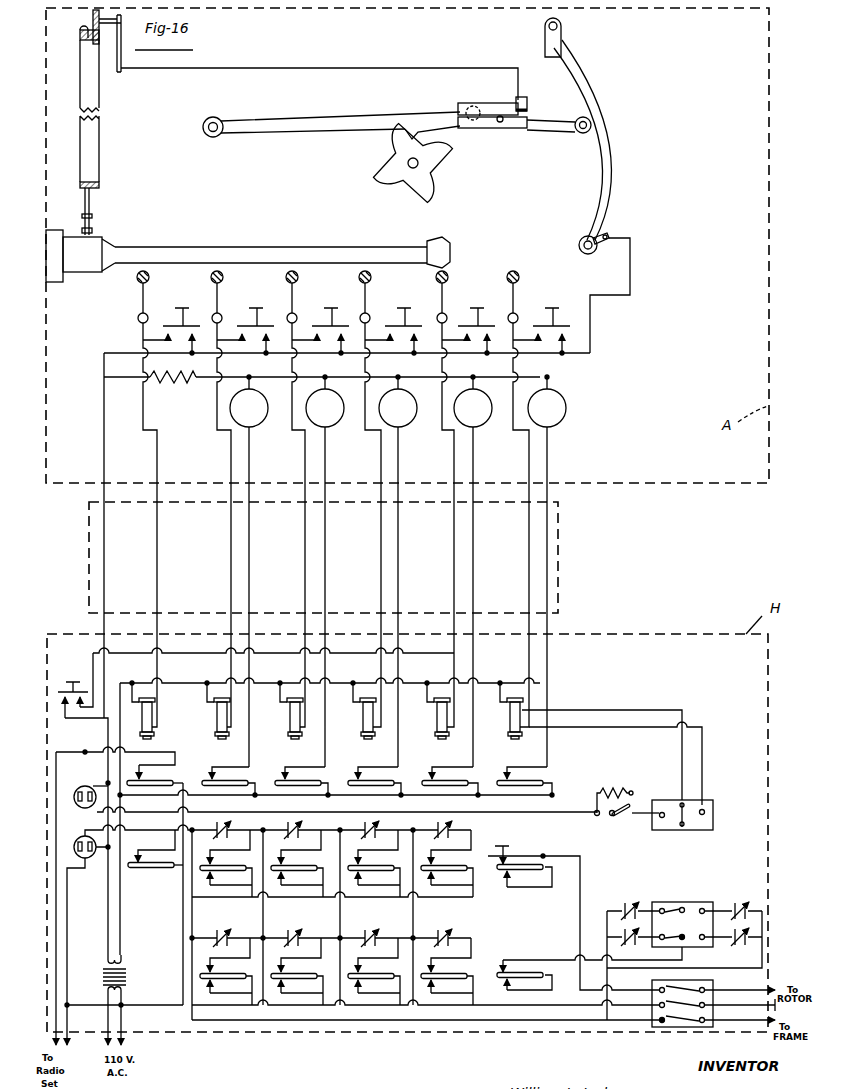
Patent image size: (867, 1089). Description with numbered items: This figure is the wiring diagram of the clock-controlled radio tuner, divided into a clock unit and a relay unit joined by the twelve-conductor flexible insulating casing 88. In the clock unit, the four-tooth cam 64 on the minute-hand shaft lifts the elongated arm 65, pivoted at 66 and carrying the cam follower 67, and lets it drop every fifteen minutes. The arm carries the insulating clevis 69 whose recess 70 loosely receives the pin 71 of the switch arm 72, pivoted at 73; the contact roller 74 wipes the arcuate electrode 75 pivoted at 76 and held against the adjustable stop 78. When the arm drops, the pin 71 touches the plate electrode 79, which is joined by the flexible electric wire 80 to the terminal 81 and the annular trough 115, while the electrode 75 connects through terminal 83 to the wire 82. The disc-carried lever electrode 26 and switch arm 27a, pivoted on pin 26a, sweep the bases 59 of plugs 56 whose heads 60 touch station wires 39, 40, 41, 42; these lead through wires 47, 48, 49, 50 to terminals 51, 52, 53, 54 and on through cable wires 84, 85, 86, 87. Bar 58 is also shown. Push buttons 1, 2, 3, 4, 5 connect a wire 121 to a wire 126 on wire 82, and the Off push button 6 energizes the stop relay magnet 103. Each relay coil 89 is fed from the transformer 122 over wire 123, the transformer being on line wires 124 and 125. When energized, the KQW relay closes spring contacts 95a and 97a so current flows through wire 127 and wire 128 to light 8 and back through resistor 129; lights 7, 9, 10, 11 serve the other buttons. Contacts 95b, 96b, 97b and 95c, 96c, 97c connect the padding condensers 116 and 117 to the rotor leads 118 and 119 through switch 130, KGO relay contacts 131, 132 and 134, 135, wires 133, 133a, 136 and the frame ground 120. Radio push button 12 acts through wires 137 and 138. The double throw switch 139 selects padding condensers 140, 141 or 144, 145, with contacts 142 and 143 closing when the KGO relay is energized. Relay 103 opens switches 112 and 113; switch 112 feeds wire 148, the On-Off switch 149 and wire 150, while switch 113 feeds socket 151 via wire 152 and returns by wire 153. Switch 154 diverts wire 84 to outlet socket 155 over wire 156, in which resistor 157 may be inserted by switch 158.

The push button 1 is at (560, 309).
The push button 2 is at (484, 309).
The push button 3 is at (411, 309).
The push button 4 is at (338, 309).
The push button 5 is at (262, 309).
The push button 6 is at (189, 309).
The light 7 is at (561, 397).
The light 8 is at (486, 398).
The light 9 is at (411, 398).
The light 10 is at (337, 396).
The light 11 is at (266, 398).
The push button 12 is at (81, 680).
The lever electrode 26 is at (93, 231).
The pivot pin 26a is at (96, 215).
The switch arm 27a is at (85, 198).
The wire 39 is at (516, 270).
The wire 40 is at (448, 279).
The wire 41 is at (371, 278).
The wire 42 is at (137, 279).
The wire 47 is at (517, 300).
The wire 48 is at (445, 300).
The wire 49 is at (367, 300).
The wire 50 is at (143, 298).
The terminal 51 is at (519, 316).
The terminal 52 is at (447, 317).
The terminal 53 is at (370, 316).
The terminal 54 is at (138, 321).
The plug 56 is at (70, 272).
The bar 58 is at (250, 252).
The plug base 59 is at (88, 275).
The plug head 60 is at (443, 241).
The four-tooth cam 64 is at (399, 190).
The elongated arm 65 is at (327, 135).
The pivot 66 is at (221, 119).
The cam follower 67 is at (415, 128).
The clevis 69 is at (464, 128).
The recess 70 is at (505, 121).
The pin 71 is at (500, 103).
The switch arm 72 is at (562, 133).
The pivot 73 is at (466, 106).
The contact roller 74 is at (580, 118).
The arcuate electrode 75 is at (598, 89).
The pivot 76 is at (580, 251).
The adjustable stop 78 is at (563, 34).
The plate electrode 79 is at (527, 98).
The flexible electric wire 80 is at (406, 68).
The terminal 81 is at (117, 58).
The wire 82 is at (104, 443).
The terminal 83 is at (601, 246).
The wire 84 is at (529, 453).
The wire 85 is at (454, 453).
The wire 86 is at (381, 453).
The wire 87 is at (157, 455).
The flexible insulating casing 88 is at (560, 503).
The relay coil 89 is at (437, 716).
The spring contact 95a is at (452, 766).
The spring contact 95b is at (508, 860).
The spring contact 95c is at (445, 976).
The spring contact 96b is at (456, 851).
The spring contact 96c is at (456, 958).
The spring contact 97a is at (446, 782).
The spring contact 97b is at (470, 887).
The spring contact 97c is at (458, 993).
The stop relay magnet 103 is at (153, 715).
The switch 112 is at (130, 781).
The switch 113 is at (130, 870).
The annular trough 115 is at (97, 170).
The padding condenser 116 is at (441, 826).
The padding condenser 117 is at (443, 930).
The lead 118 is at (760, 989).
The lead 119 is at (760, 1004).
The wire 120 is at (760, 1019).
The wire 121 is at (470, 334).
The transformer 122 is at (126, 975).
The wire 123 is at (408, 683).
The wire 124 is at (123, 1010).
The wire 125 is at (106, 1014).
The wire 126 is at (487, 345).
The wire 127 is at (478, 797).
The wire 128 is at (474, 661).
The resistor 129 is at (185, 385).
The switch 130 is at (681, 1027).
The contact 131 is at (537, 856).
The contact 132 is at (548, 890).
The wire 133 is at (413, 920).
The wire 133a is at (572, 1006).
The contact 134 is at (522, 972).
The contact 135 is at (533, 991).
The wire 136 is at (520, 1006).
The wire 137 is at (178, 658).
The wire 138 is at (96, 723).
The double throw switch 139 is at (695, 902).
The padding condenser 140 is at (631, 903).
The padding condenser 141 is at (631, 943).
The contact 142 is at (503, 846).
The contact 143 is at (503, 958).
The padding condenser 144 is at (745, 902).
The padding condenser 145 is at (747, 930).
The wire 148 is at (56, 846).
The On-Off switch 149 is at (54, 1022).
The wire 150 is at (103, 1005).
The A.C. socket 151 is at (91, 860).
The wire 152 is at (183, 926).
The wire 153 is at (102, 984).
The switch 154 is at (703, 826).
The outlet socket 155 is at (75, 792).
The wire 156 is at (584, 812).
The resistor 157 is at (626, 793).
The switch 158 is at (616, 821).